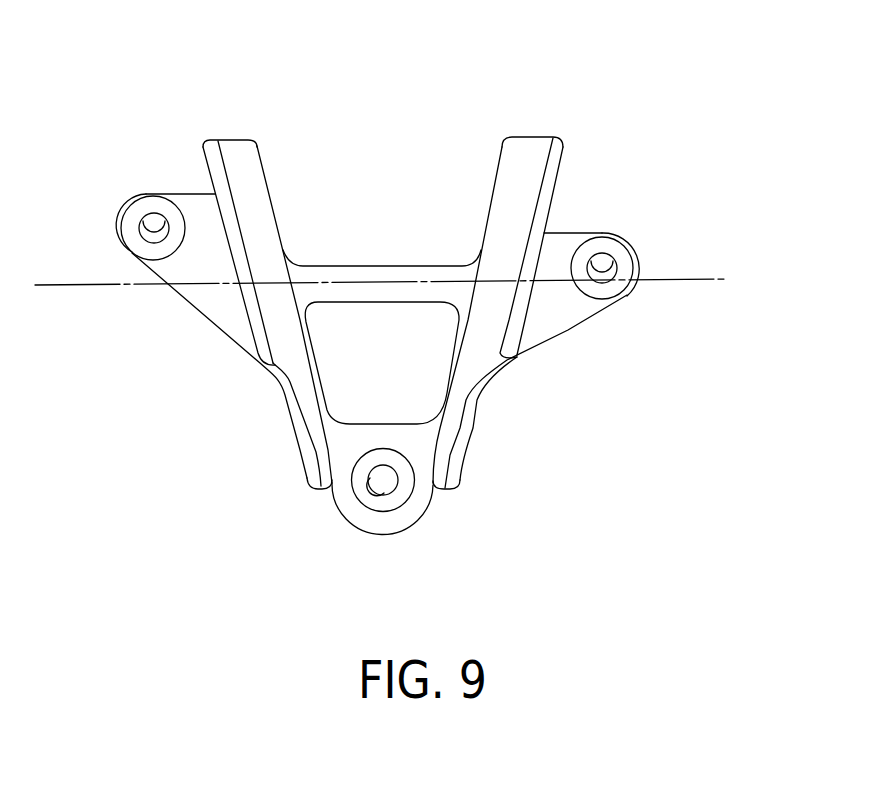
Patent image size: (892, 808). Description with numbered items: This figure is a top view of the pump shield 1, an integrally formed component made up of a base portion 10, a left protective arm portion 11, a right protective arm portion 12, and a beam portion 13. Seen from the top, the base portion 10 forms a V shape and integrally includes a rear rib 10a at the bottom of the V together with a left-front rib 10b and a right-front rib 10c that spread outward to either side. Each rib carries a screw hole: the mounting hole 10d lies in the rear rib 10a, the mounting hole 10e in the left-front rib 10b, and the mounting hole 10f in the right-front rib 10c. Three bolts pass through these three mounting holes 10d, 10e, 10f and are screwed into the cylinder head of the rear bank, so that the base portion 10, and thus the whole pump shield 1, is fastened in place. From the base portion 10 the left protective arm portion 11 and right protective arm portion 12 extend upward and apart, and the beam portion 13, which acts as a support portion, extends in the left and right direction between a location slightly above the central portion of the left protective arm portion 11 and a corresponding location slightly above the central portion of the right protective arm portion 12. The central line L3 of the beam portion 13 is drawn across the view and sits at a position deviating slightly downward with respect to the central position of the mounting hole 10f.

The pump shield 1 is at (617, 98).
The base portion 10 is at (377, 323).
The rear rib 10a is at (422, 513).
The left-front rib 10b is at (213, 326).
The right-front rib 10c is at (582, 322).
The mounting hole 10d is at (376, 492).
The mounting hole 10e is at (142, 218).
The mounting hole 10f is at (615, 256).
The left protective arm portion 11 is at (235, 139).
The right protective arm portion 12 is at (530, 136).
The beam portion 13 is at (373, 265).
The central line of the beam portion L3 is at (396, 277).